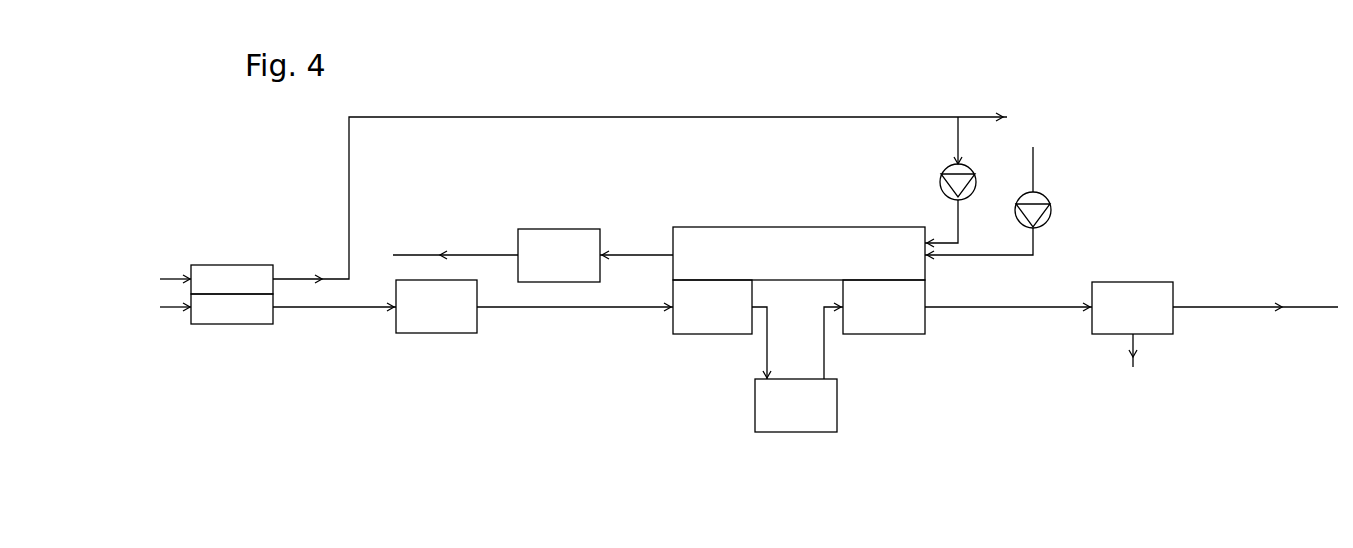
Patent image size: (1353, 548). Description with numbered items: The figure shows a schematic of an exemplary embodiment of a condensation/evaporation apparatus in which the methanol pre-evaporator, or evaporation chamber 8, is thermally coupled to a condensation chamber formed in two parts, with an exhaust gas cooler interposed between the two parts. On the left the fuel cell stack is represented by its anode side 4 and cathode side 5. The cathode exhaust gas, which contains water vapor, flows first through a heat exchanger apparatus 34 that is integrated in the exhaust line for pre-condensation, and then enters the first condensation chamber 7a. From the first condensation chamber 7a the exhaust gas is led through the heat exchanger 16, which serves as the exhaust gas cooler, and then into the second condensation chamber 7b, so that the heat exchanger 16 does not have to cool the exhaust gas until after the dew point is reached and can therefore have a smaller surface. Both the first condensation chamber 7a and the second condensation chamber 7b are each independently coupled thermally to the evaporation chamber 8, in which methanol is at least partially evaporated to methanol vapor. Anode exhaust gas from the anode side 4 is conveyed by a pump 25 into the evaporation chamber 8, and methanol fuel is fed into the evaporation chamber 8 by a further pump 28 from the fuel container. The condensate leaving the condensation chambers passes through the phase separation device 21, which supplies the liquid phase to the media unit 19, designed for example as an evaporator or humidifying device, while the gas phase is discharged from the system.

The anode side 4 is at (232, 279).
The cathode side 5 is at (232, 309).
The heat exchanger apparatus 34 is at (436, 306).
The media unit 19 is at (559, 255).
The evaporation chamber 8 is at (799, 253).
The first condensation chamber 7a is at (712, 307).
The second condensation chamber 7b is at (884, 307).
The heat exchanger 16 is at (796, 405).
The phase separation device 21 is at (1132, 324).
The pump 25 is at (949, 182).
The pump 28 is at (988, 203).